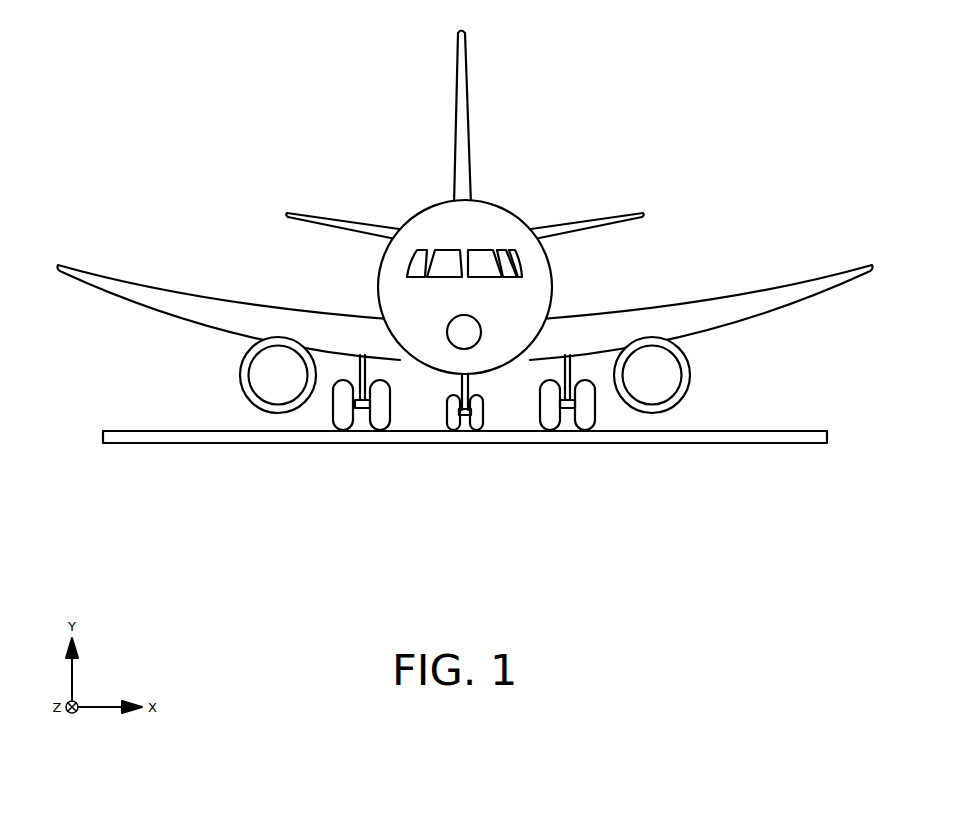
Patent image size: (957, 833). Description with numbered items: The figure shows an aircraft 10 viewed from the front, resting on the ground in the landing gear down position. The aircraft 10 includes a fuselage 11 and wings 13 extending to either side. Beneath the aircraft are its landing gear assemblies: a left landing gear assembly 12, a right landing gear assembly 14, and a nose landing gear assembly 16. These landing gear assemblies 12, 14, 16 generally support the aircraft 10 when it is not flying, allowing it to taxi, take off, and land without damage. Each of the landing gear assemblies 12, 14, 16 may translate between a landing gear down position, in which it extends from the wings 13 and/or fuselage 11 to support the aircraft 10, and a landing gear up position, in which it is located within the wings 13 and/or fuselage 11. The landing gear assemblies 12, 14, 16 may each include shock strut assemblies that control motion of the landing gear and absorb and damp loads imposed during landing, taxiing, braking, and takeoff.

The aircraft 10 is at (465, 248).
The fuselage 11 is at (492, 217).
The left landing gear assembly 12 is at (603, 412).
The wings 13 is at (188, 312).
The right landing gear assembly 14 is at (320, 414).
The nose landing gear assembly 16 is at (490, 398).